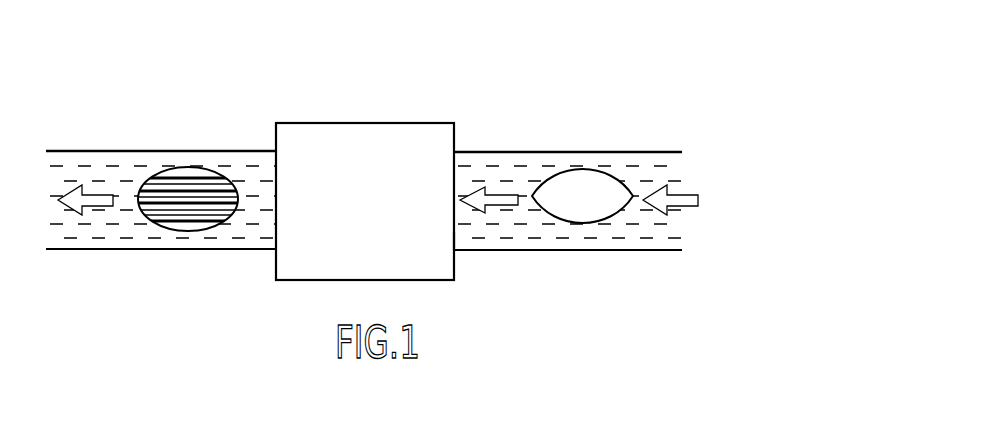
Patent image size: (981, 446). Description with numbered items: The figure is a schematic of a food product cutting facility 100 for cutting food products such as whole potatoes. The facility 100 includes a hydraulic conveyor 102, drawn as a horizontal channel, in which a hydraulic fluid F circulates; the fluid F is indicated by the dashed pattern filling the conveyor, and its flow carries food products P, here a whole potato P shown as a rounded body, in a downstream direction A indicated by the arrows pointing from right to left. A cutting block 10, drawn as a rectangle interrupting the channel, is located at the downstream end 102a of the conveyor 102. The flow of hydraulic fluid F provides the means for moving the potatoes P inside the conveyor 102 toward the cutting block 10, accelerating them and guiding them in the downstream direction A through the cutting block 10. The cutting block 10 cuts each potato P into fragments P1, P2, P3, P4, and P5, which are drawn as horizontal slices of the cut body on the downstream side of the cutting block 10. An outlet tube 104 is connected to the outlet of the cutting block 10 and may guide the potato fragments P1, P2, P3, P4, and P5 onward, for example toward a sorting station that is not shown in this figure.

The food product cutting facility 100 is at (570, 72).
The cutting block 10 is at (374, 211).
The hydraulic conveyor 102 is at (528, 250).
The downstream end 102a is at (455, 236).
The outlet tube 104 is at (97, 150).
The hydraulic fluid F is at (617, 240).
The downstream direction A is at (690, 197).
The food product P is at (592, 205).
The fragment P1 is at (175, 170).
The fragment P2 is at (209, 184).
The fragment P3 is at (162, 202).
The fragment P4 is at (190, 210).
The fragment P5 is at (220, 222).